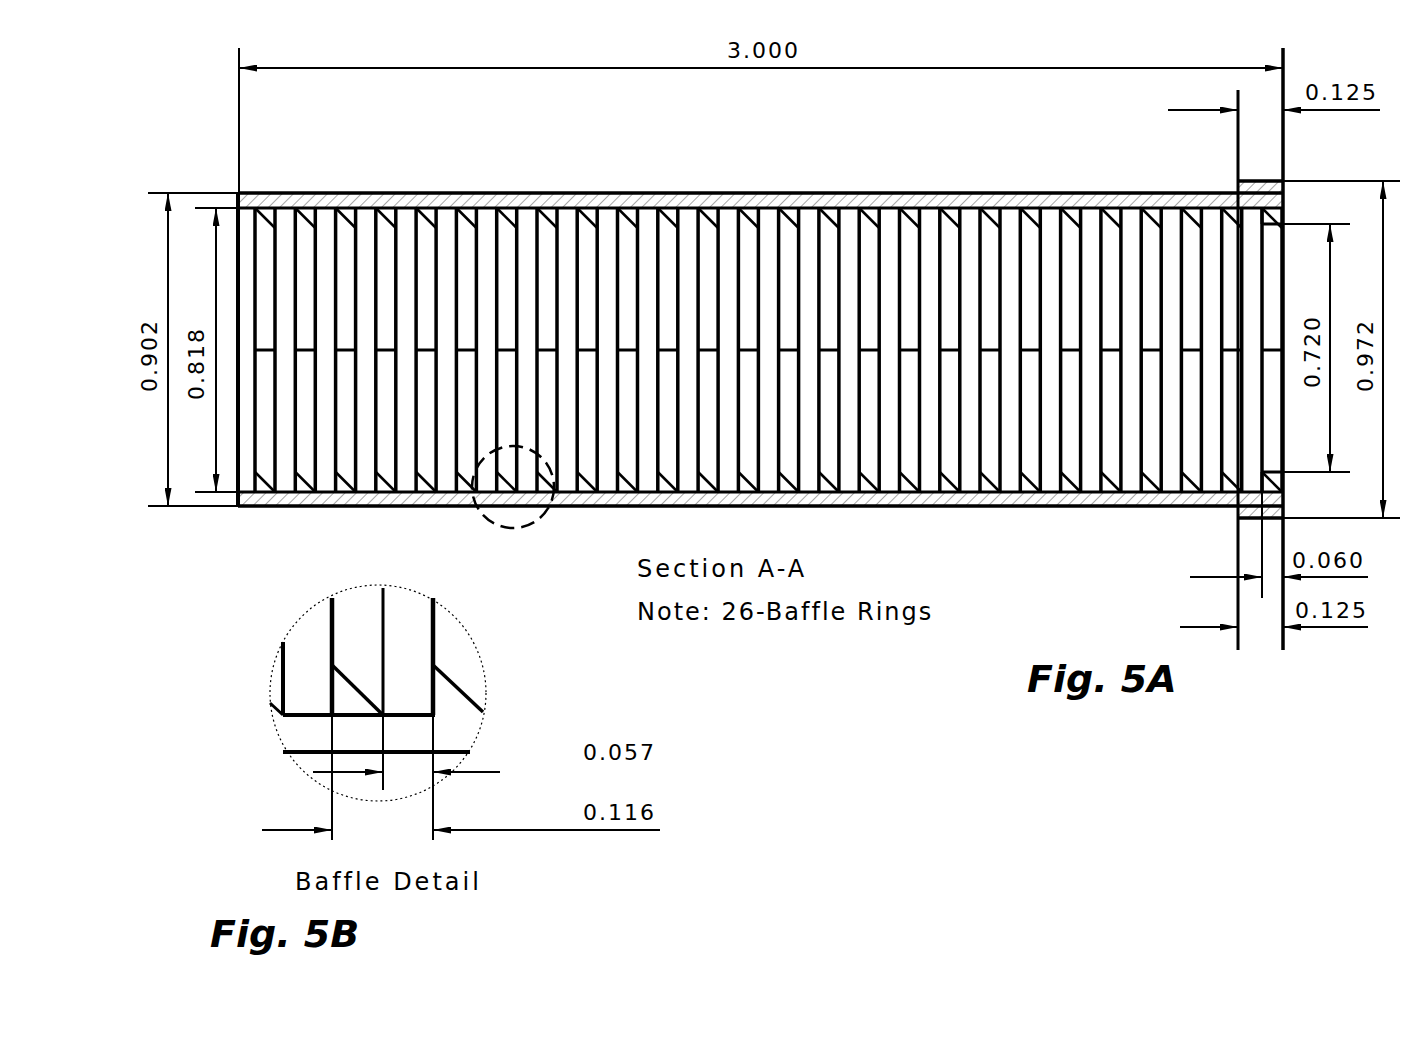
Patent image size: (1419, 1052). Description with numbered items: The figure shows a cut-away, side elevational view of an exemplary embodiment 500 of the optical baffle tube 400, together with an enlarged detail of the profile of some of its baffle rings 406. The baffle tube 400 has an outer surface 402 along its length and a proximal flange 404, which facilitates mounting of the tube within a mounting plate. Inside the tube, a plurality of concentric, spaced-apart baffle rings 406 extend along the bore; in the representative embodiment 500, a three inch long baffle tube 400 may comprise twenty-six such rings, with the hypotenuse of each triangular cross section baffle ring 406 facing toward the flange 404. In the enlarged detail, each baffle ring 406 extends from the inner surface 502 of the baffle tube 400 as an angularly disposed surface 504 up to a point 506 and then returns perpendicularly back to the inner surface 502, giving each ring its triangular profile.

In FIG. 5A, the optical baffle tube 400 is at (708, 349).
In FIG. 5A, the outer surface 402 is at (300, 508).
In FIG. 5A, the proximal flange 404 is at (1275, 180).
In FIG. 5A, the baffle rings 406 is at (558, 192).
In FIG. 5A, the embodiment 500 is at (1036, 570).
In FIG. 5B, the embodiment 500 is at (621, 890).
In FIG. 5B, the inner surface 502 is at (393, 748).
In FIG. 5B, the angularly disposed surface 504 is at (372, 710).
In FIG. 5B, the point 506 is at (445, 673).